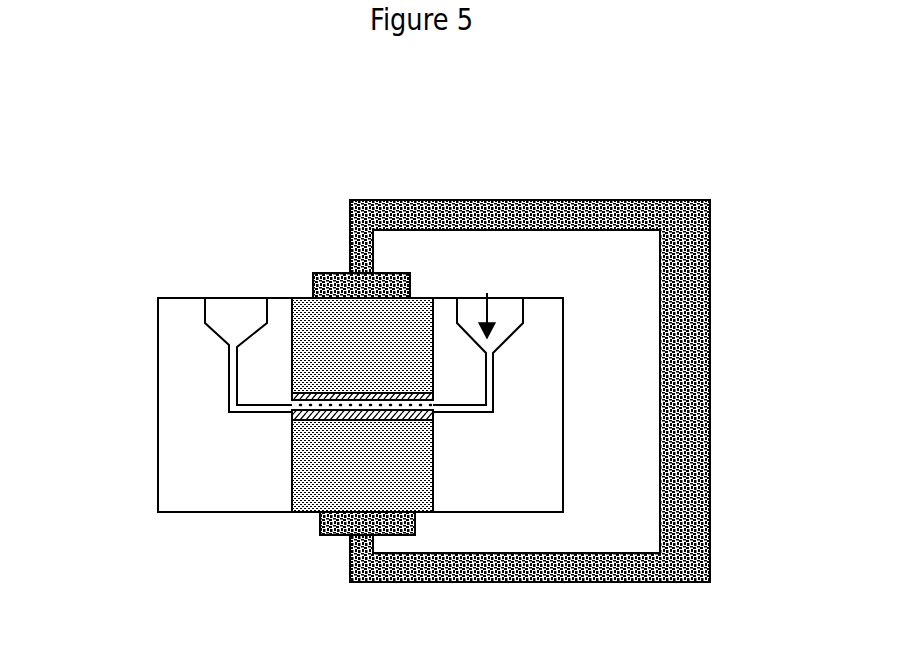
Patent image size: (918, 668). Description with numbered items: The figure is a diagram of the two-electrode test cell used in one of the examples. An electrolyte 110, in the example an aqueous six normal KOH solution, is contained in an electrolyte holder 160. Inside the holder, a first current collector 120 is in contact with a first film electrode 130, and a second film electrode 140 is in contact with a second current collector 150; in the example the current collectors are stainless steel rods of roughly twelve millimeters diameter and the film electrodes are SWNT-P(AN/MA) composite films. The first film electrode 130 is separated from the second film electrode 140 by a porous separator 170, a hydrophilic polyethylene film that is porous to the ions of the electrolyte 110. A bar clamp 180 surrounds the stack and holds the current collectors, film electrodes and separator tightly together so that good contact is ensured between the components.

The electrolyte 110 is at (487, 290).
The first current collector 120 is at (327, 327).
The first film electrode 130 is at (285, 393).
The second film electrode 140 is at (287, 420).
The second current collector 150 is at (305, 472).
The electrolyte holder 160 is at (492, 495).
The porous separator 170 is at (377, 407).
The bar clamp 180 is at (683, 448).